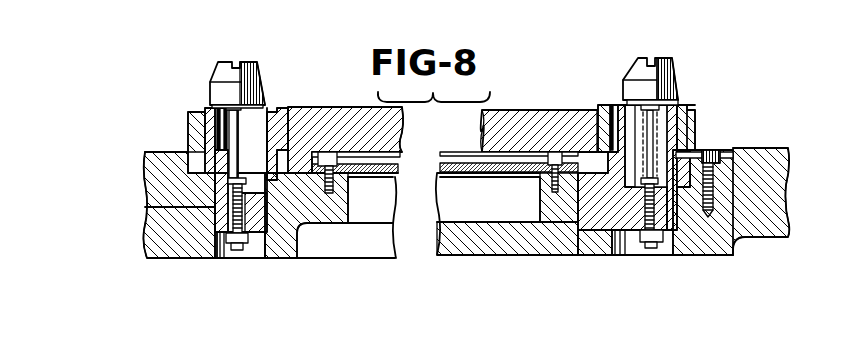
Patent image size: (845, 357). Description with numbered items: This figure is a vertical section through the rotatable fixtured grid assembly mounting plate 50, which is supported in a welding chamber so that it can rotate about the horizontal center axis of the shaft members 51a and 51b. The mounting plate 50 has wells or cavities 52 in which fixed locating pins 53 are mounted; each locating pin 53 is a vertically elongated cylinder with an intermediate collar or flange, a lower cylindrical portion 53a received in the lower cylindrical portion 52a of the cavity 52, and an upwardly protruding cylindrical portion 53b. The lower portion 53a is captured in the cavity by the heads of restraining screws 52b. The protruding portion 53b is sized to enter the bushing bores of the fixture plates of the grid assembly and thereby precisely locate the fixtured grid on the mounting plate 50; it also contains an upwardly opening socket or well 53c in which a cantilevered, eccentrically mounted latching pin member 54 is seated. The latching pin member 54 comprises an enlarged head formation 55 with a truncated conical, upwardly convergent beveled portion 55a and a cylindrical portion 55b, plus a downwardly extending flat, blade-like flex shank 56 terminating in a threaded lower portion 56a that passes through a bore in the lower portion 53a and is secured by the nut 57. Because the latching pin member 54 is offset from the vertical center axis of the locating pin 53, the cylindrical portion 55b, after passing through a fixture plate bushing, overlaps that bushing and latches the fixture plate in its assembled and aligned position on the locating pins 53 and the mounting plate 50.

The rotatable fixtured grid assembly mounting plate 50 is at (137, 236).
The shaft member 51a is at (142, 163).
The shaft member 51b is at (786, 172).
The cavity 52 is at (300, 160).
The lower cylindrical portion of cavity 52a is at (270, 254).
The restraining screw 52b is at (720, 151).
The locating pin 53 is at (620, 214).
The lower cylindrical portion of locating pin 53a is at (258, 242).
The upwardly protruding cylindrical portion of locating pin 53b is at (258, 125).
The socket 53c is at (250, 133).
The latching pin member 54 is at (219, 62).
The enlarged head formation 55 is at (678, 84).
The beveled portion 55a is at (670, 62).
The cylindrical portion of head 55b is at (680, 90).
The flex shank 56 is at (233, 137).
The threaded lower portion 56a is at (150, 207).
The nut 57 is at (234, 250).